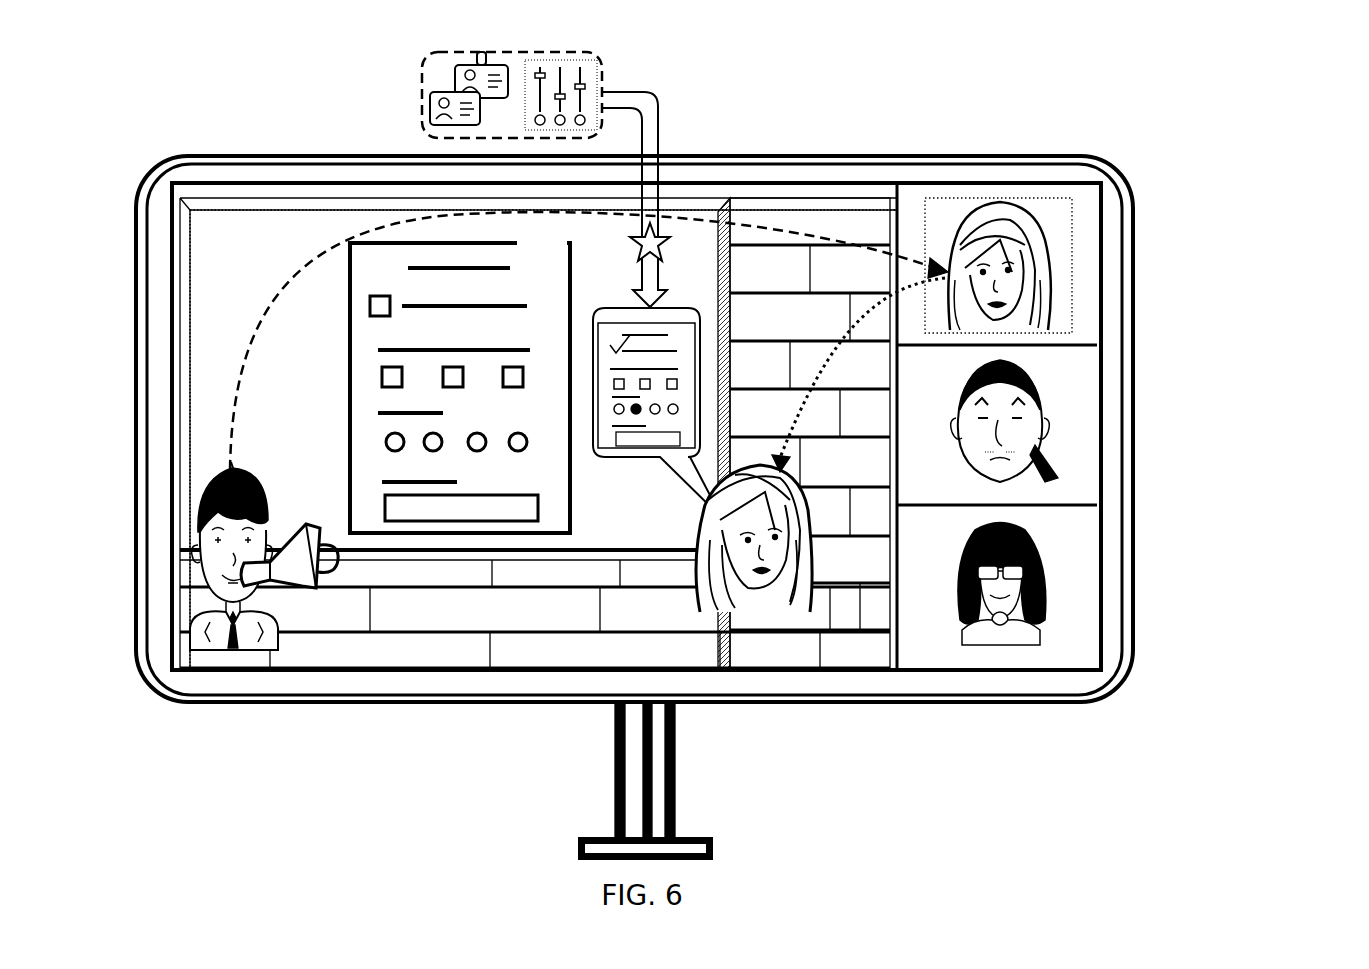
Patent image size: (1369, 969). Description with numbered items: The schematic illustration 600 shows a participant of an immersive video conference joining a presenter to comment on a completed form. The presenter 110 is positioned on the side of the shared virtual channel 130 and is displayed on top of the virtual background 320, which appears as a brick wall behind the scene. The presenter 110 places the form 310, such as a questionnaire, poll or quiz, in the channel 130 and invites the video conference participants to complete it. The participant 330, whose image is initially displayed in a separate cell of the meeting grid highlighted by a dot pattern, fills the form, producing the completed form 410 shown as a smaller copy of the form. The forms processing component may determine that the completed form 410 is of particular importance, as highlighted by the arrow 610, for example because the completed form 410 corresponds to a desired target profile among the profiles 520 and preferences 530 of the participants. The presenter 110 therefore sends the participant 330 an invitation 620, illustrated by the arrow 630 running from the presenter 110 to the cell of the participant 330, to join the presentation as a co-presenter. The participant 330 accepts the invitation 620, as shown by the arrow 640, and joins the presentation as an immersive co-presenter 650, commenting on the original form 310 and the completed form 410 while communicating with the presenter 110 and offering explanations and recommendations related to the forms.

The schematic illustration 600 is at (1344, 104).
The shared virtual channel 130 is at (180, 200).
The presenter 110 is at (204, 582).
The invitation 620 is at (292, 590).
The form 310 is at (377, 242).
The completed form 410 is at (668, 308).
The arrow 610 is at (665, 140).
The profiles 520 is at (452, 82).
The preferences 530 is at (606, 90).
The virtual background 320 is at (852, 200).
The arrow 640 is at (895, 195).
The arrow 630 is at (228, 378).
The participant 330 is at (1040, 302).
The immersive co-presenter 650 is at (802, 605).